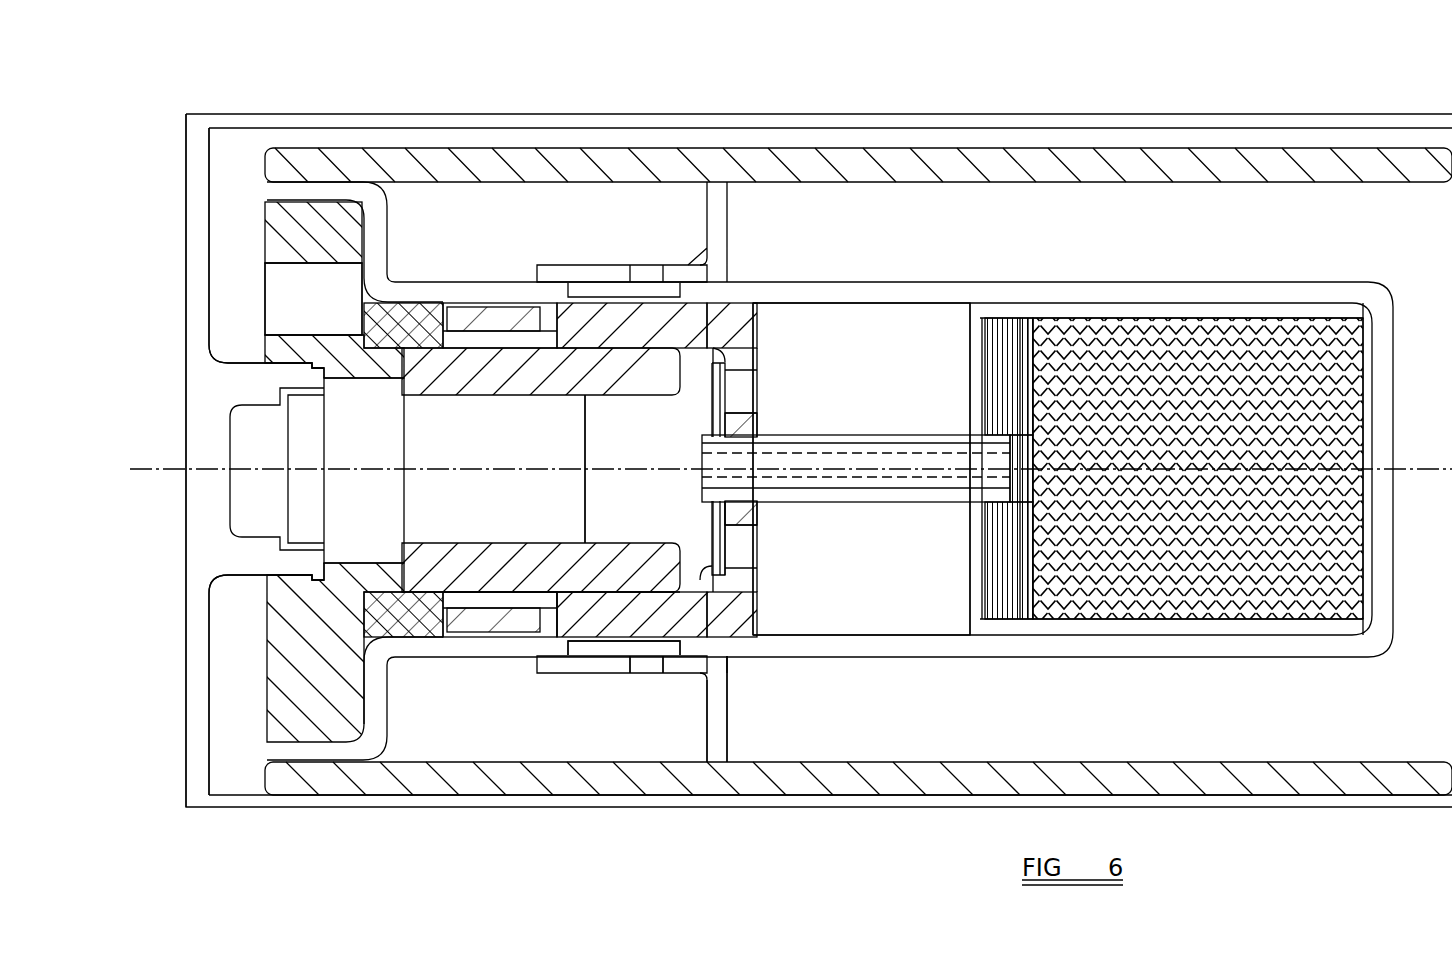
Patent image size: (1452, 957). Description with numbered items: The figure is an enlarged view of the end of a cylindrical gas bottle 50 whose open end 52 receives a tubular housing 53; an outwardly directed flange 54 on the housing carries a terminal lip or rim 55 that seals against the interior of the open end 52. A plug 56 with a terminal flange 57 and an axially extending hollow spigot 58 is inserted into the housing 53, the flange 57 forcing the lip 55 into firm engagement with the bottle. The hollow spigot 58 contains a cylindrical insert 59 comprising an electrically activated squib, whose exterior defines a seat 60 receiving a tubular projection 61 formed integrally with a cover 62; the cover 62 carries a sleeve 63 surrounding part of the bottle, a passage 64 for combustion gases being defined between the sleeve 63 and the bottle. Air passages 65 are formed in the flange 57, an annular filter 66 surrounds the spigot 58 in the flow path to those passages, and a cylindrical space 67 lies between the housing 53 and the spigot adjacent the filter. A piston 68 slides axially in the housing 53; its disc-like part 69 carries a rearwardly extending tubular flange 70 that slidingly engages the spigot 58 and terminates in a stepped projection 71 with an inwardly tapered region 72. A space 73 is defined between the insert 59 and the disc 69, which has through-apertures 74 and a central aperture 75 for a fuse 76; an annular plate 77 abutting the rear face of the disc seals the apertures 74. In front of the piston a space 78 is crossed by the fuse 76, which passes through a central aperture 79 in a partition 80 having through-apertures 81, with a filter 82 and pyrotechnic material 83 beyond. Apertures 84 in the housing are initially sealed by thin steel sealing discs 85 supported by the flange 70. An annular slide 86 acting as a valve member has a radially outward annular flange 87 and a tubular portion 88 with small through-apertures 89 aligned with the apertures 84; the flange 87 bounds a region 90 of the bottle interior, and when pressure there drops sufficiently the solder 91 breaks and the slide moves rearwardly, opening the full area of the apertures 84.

The cylindrical gas bottle 50 is at (1354, 162).
The open end 52 is at (378, 150).
The tubular housing 53 is at (1255, 290).
The outwardly directed flange 54 is at (402, 246).
The terminal lip or rim 55 is at (316, 192).
The plug 56 is at (262, 640).
The terminal flange 57 is at (278, 702).
The hollow spigot 58 is at (522, 585).
The cylindrical insert 59 is at (433, 512).
The seat 60 is at (297, 413).
The tubular projection 61 is at (272, 372).
The cover 62 is at (188, 290).
The sleeve 63 is at (629, 116).
The passage 64 is at (1002, 141).
The apertures or air passages 65 is at (283, 292).
The annular filter 66 is at (427, 310).
The cylindrical space 67 is at (465, 322).
The piston 68 is at (733, 316).
The disc-like part 69 is at (748, 352).
The rearwardly extending tubular flange 70 is at (694, 318).
The rearwardly extending projection 71 is at (544, 292).
The tapered region 72 is at (492, 585).
The space 73 is at (616, 515).
The through-apertures 74 is at (742, 373).
The centrally located aperture 75 is at (730, 420).
The fuse 76 is at (858, 436).
The annular plate 77 is at (747, 615).
The space 78 is at (854, 602).
The central aperture 79 is at (970, 505).
The partition 80 is at (1012, 615).
The through-apertures 81 is at (1040, 615).
The filter 82 is at (1045, 560).
The pyrotechnic material 83 is at (1278, 572).
The apertures 84 is at (564, 650).
The sealing disc 85 is at (594, 600).
The slide 86 is at (640, 664).
The annular flange 87 is at (724, 747).
The tubular portion 88 is at (719, 676).
The through-apertures 89 is at (684, 672).
The region 90 is at (530, 738).
The solder 91 is at (728, 660).